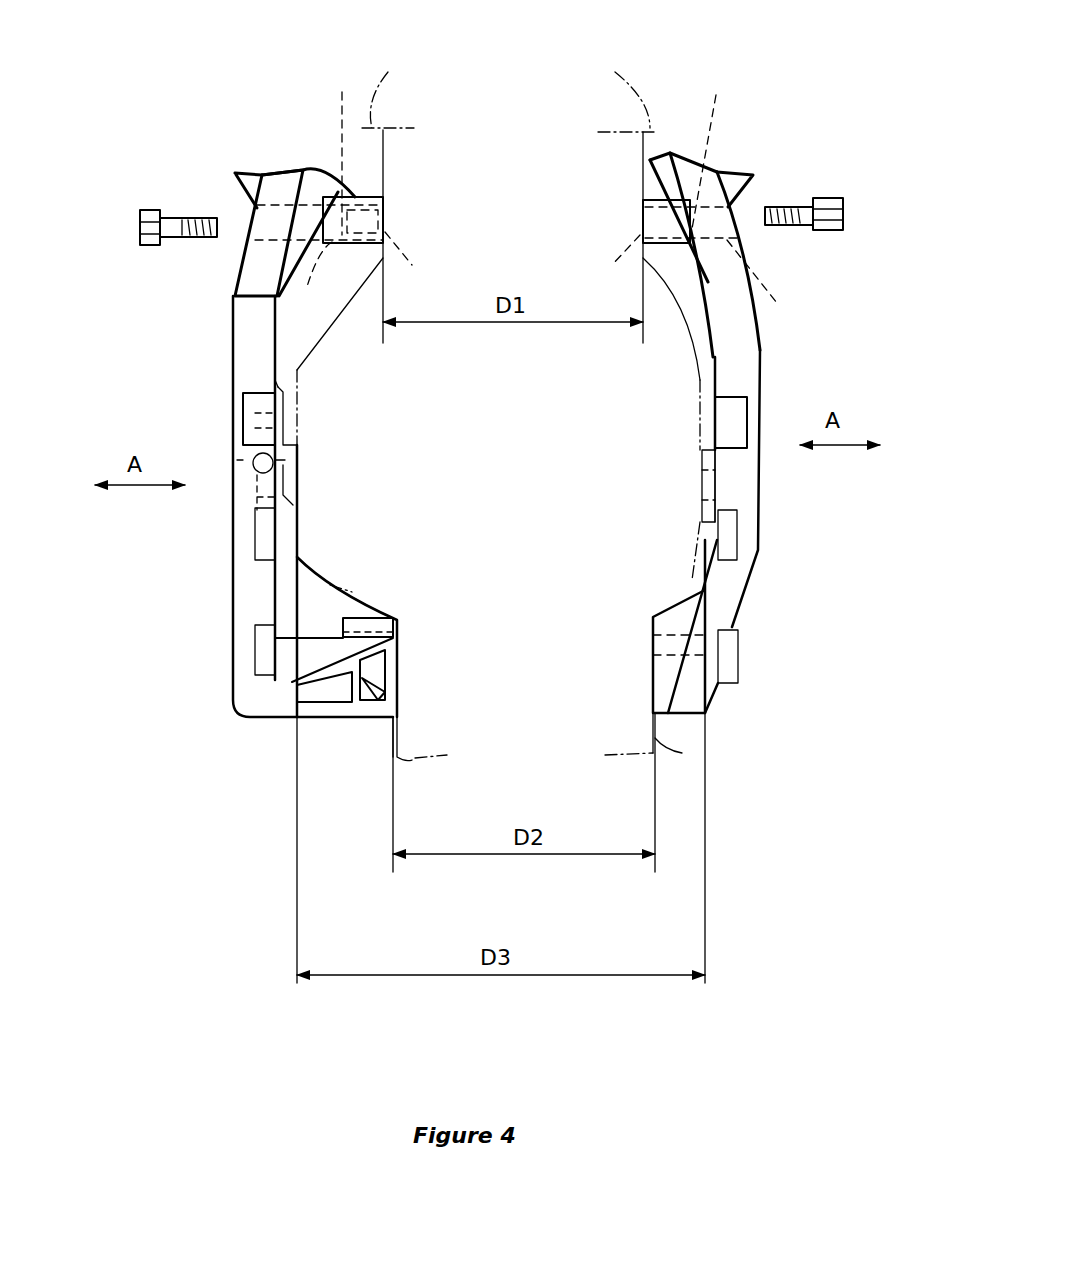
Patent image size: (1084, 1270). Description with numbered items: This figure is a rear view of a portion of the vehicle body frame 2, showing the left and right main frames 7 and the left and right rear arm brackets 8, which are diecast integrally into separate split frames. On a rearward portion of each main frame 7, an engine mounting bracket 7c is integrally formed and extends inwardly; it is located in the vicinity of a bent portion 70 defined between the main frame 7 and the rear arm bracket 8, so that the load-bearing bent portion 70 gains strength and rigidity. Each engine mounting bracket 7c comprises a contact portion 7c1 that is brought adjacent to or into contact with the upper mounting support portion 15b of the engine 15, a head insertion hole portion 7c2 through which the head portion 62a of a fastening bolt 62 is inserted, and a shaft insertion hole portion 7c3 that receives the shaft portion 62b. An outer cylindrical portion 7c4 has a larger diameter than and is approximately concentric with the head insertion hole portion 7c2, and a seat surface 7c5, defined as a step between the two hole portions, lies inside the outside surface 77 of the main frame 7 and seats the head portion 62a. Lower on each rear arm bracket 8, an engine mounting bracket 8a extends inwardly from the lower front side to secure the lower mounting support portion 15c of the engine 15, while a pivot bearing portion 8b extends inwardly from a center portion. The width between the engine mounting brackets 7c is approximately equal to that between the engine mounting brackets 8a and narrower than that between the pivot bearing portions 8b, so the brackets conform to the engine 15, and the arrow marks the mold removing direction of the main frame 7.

The frame 2 is at (790, 68).
The main frame 7 is at (258, 185).
The engine mounting bracket 7c is at (350, 247).
The contact portion 7c1 is at (387, 210).
The head insertion hole portion 7c2 is at (543, 287).
The shaft insertion hole portion 7c3 is at (512, 261).
The outer cylindrical portion 7c4 is at (337, 178).
The seat surface 7c5 is at (499, 147).
The rear arm bracket 8 is at (222, 520).
The engine mounting bracket 8a is at (318, 720).
The pivot bearing portion 8b is at (283, 503).
The engine 15 is at (457, 740).
The upper mounting support portion 15b is at (509, 87).
The lower mounting support portion 15c is at (392, 742).
The fastening bolt 62 is at (493, 222).
The head portion 62a is at (150, 235).
The shaft portion 62b is at (168, 208).
The bent portion 70 is at (240, 378).
The outside surface 77 is at (235, 290).